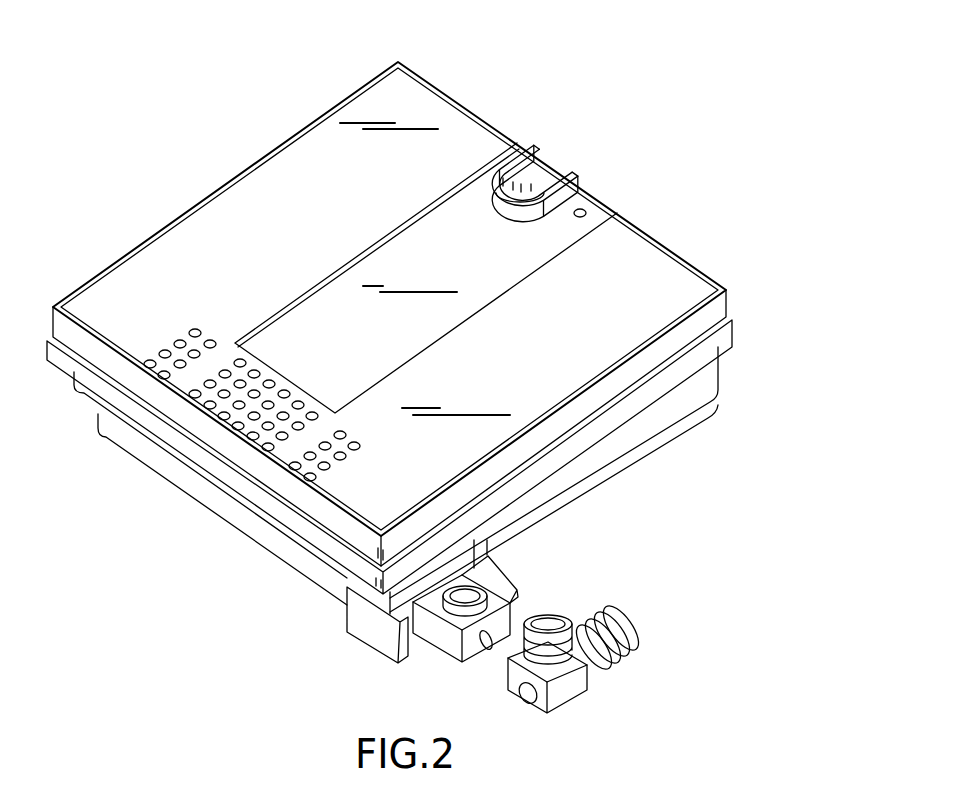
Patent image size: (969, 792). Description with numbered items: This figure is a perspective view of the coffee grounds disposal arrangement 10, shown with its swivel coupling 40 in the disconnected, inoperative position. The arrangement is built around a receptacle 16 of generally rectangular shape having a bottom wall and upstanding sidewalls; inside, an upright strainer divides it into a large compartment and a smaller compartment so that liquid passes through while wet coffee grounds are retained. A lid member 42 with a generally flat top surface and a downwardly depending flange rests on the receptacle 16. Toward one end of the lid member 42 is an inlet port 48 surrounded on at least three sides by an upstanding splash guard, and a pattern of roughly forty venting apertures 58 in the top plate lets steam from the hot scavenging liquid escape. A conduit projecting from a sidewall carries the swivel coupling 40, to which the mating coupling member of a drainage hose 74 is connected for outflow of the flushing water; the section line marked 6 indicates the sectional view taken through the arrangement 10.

The coffee grounds disposal arrangement 10 is at (252, 151).
The receptacle 16 is at (272, 552).
The lid member 42 is at (730, 291).
The inlet port 48 is at (575, 166).
The venting apertures 58 is at (207, 406).
The section line 6- 6 is at (567, 400).
The swivel coupling 40 is at (440, 646).
The drainage hose 74 is at (613, 661).